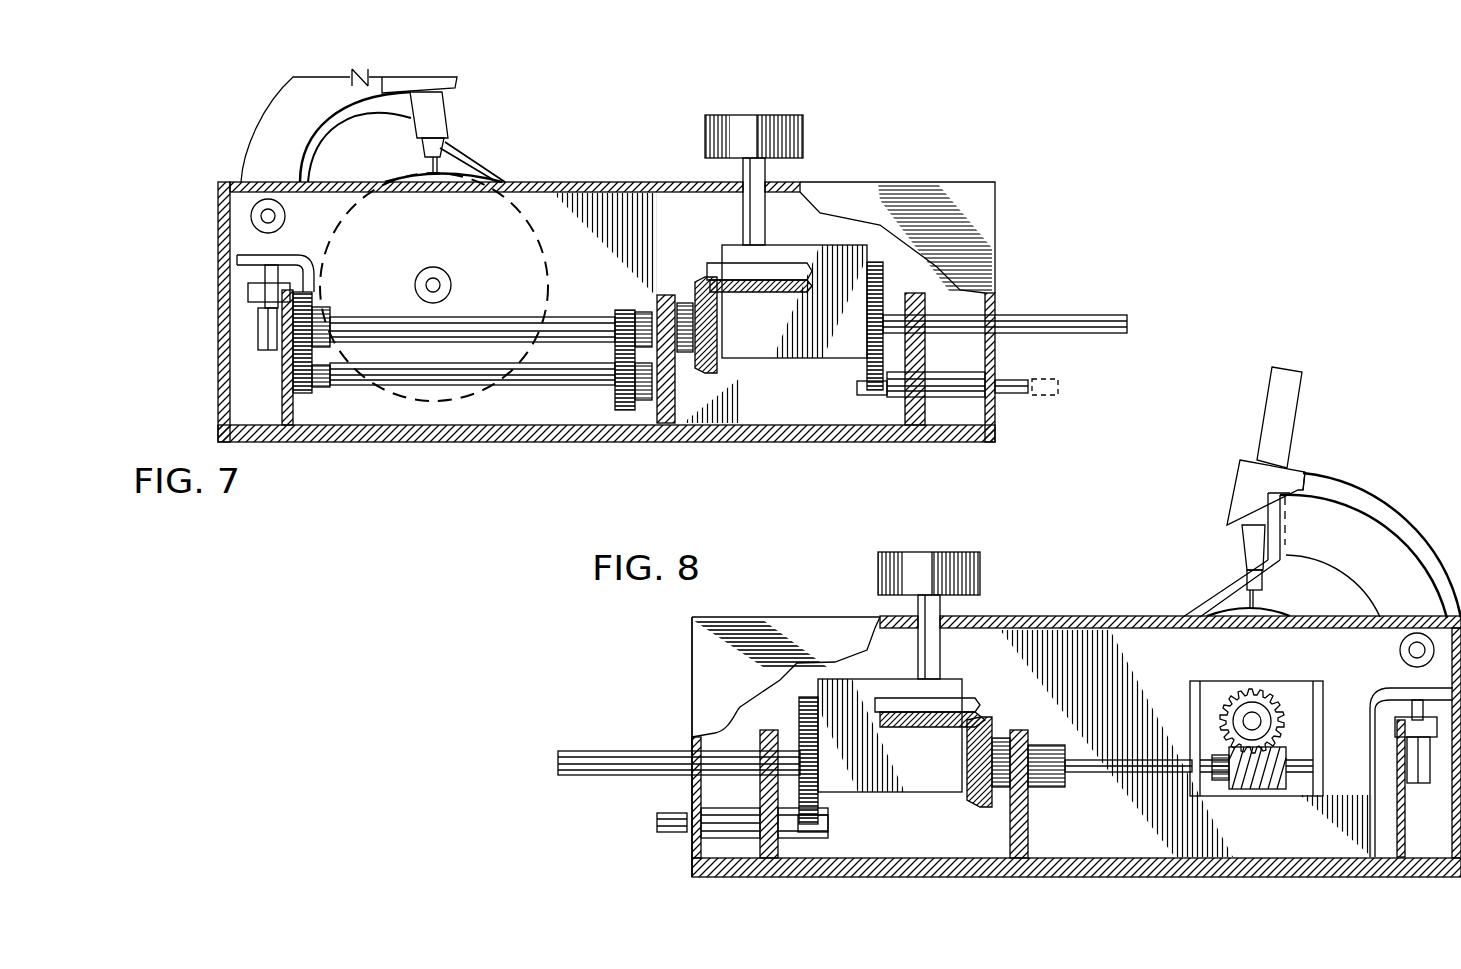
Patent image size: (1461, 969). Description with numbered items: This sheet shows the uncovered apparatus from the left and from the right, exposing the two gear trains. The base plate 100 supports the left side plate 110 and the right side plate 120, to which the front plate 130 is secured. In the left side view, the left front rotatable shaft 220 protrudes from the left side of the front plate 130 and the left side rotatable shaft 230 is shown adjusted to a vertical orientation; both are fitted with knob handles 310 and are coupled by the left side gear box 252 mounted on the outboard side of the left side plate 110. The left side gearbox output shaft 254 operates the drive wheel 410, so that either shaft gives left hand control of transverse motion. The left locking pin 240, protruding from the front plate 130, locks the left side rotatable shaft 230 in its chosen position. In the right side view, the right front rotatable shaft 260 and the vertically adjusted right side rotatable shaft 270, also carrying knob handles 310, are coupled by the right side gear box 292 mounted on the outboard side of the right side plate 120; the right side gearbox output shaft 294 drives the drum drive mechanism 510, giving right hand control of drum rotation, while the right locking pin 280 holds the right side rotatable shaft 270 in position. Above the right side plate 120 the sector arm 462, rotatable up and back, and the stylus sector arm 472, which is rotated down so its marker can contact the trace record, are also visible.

In FIG. 7, the base plate 100 is at (365, 443).
In FIG. 8, the base plate 100 is at (862, 877).
In FIG. 7, the left side plate 110 is at (550, 223).
In FIG. 8, the right side plate 120 is at (1104, 647).
In FIG. 7, the front plate 130 is at (998, 347).
In FIG. 8, the front plate 130 is at (692, 647).
In FIG. 7, the left front rotatable shaft 220 is at (1038, 313).
In FIG. 7, the left side rotatable shaft 230 is at (743, 218).
In FIG. 7, the left locking pin 240 is at (1017, 397).
In FIG. 7, the left side gear box 252 is at (758, 368).
In FIG. 7, the left side gearbox output shaft 254 is at (567, 314).
In FIG. 8, the right front rotatable shaft 260 is at (635, 750).
In FIG. 8, the right side rotatable shaft 270 is at (940, 657).
In FIG. 8, the right locking pin 280 is at (667, 837).
In FIG. 8, the right side gear box 292 is at (835, 658).
In FIG. 8, the right side gearbox output shaft 294 is at (1173, 758).
In FIG. 7, the knob handle 310 is at (805, 138).
In FIG. 8, the knob handle 310 is at (980, 567).
In FIG. 7, the drive wheel 410 is at (258, 322).
In FIG. 8, the sector arm 462 is at (1379, 521).
In FIG. 8, the stylus sector arm 472 is at (1337, 475).
In FIG. 8, the drum drive mechanism 510 is at (1183, 693).